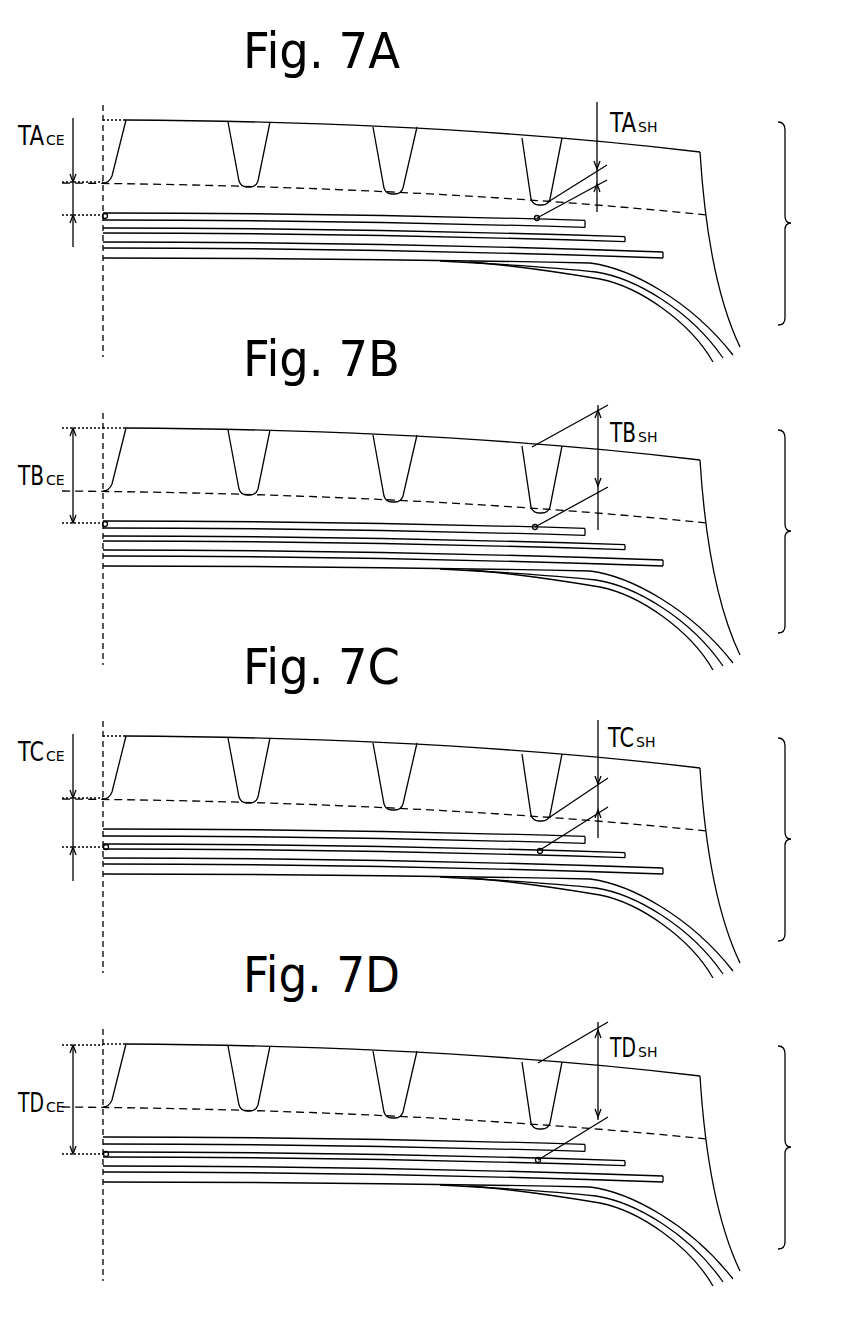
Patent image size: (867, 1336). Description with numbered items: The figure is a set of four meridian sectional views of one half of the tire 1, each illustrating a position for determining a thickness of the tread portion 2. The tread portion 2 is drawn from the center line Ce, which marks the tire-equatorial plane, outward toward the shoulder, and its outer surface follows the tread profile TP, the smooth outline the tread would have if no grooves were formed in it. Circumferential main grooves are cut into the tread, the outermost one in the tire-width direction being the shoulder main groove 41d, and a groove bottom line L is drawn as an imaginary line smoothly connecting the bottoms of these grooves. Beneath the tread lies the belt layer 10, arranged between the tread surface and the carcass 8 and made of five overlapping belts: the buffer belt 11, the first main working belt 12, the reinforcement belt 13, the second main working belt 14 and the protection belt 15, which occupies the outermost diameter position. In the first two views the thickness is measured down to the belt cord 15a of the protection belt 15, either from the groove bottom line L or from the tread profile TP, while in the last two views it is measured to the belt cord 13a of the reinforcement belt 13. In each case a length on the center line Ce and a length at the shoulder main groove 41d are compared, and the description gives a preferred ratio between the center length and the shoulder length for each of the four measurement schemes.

In FIG. 7A, the tire 1 is at (712, 148).
In FIG. 7B, the tire 1 is at (739, 514).
In FIG. 7C, the tire 1 is at (739, 822).
In FIG. 7D, the tire 1 is at (739, 1130).
In FIG. 7A, the tread portion 2 is at (173, 143).
In FIG. 7B, the tread portion 2 is at (401, 443).
In FIG. 7C, the tread portion 2 is at (401, 751).
In FIG. 7D, the tread portion 2 is at (401, 1059).
In FIG. 7A, the carcass 8 is at (700, 318).
In FIG. 7B, the carcass 8 is at (591, 626).
In FIG. 7C, the carcass 8 is at (591, 934).
In FIG. 7D, the carcass 8 is at (591, 1242).
In FIG. 7A, the belt layer 10 is at (800, 223).
In FIG. 7B, the belt layer 10 is at (800, 531).
In FIG. 7C, the belt layer 10 is at (800, 839).
In FIG. 7D, the belt layer 10 is at (800, 1147).
In FIG. 7A, the buffer belt 11 is at (665, 266).
In FIG. 7B, the buffer belt 11 is at (607, 617).
In FIG. 7C, the buffer belt 11 is at (607, 925).
In FIG. 7D, the buffer belt 11 is at (607, 1233).
In FIG. 7A, the first main working belt 12 is at (668, 256).
In FIG. 7B, the first main working belt 12 is at (439, 612).
In FIG. 7C, the first main working belt 12 is at (439, 920).
In FIG. 7D, the first main working belt 12 is at (439, 1228).
In FIG. 7A, the reinforcement belt 13 is at (632, 236).
In FIG. 7B, the reinforcement belt 13 is at (439, 543).
In FIG. 7C, the reinforcement belt 13 is at (439, 851).
In FIG. 7D, the reinforcement belt 13 is at (439, 1159).
In FIG. 7C, the belt cord 13a is at (323, 892).
In FIG. 7D, the belt cord 13a is at (322, 1200).
In FIG. 7A, the second main working belt 14 is at (660, 217).
In FIG. 7B, the second main working belt 14 is at (439, 513).
In FIG. 7C, the second main working belt 14 is at (439, 821).
In FIG. 7D, the second main working belt 14 is at (439, 1129).
In FIG. 7A, the protection belt 15 is at (600, 219).
In FIG. 7B, the protection belt 15 is at (439, 481).
In FIG. 7C, the protection belt 15 is at (439, 789).
In FIG. 7D, the protection belt 15 is at (439, 1097).
In FIG. 7A, the belt cord 15a is at (108, 217).
In FIG. 7B, the belt cord 15a is at (320, 575).
In FIG. 7A, the shoulder main groove 41d is at (548, 128).
In FIG. 7B, the shoulder main groove 41d is at (504, 447).
In FIG. 7C, the shoulder main groove 41d is at (504, 755).
In FIG. 7D, the shoulder main groove 41d is at (504, 1063).
In FIG. 7A, the tread profile TP is at (110, 118).
In FIG. 7B, the tread profile TP is at (123, 432).
In FIG. 7C, the tread profile TP is at (123, 740).
In FIG. 7D, the tread profile TP is at (123, 1048).
In FIG. 7A, the groove bottom line L is at (302, 183).
In FIG. 7B, the groove bottom line L is at (384, 458).
In FIG. 7C, the groove bottom line L is at (384, 766).
In FIG. 7D, the groove bottom line L is at (384, 1074).
In FIG. 7A, the center line Ce is at (107, 281).
In FIG. 7B, the center line Ce is at (152, 539).
In FIG. 7C, the center line Ce is at (152, 847).
In FIG. 7D, the center line Ce is at (152, 1155).